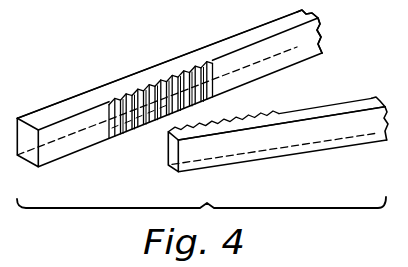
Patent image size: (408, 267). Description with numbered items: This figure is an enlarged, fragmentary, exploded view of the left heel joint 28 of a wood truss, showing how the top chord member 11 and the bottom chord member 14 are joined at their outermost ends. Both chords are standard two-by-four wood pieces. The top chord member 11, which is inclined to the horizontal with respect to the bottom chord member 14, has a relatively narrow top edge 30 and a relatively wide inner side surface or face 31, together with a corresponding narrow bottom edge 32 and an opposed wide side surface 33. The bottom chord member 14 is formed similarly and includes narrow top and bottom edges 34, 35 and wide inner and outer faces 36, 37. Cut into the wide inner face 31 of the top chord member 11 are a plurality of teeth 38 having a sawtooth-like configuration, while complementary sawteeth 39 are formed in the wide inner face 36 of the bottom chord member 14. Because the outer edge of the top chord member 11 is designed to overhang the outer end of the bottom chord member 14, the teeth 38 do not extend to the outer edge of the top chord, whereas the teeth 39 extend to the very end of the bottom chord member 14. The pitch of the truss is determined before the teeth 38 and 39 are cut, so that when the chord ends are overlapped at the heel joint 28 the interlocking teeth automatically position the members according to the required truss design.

The top chord member 11 is at (232, 23).
The bottom chord member 14 is at (335, 92).
The heel joint 28 is at (104, 175).
The top edge 30 is at (172, 65).
The inner side surface 31 is at (298, 55).
The bottom edge 32 is at (70, 147).
The side surface 33 is at (52, 113).
The top edge 34 is at (285, 113).
The bottom edge 35 is at (277, 152).
The inner face 36 is at (337, 122).
The outer face 37 is at (375, 123).
The teeth 38 is at (132, 118).
The sawteeth 39 is at (217, 114).